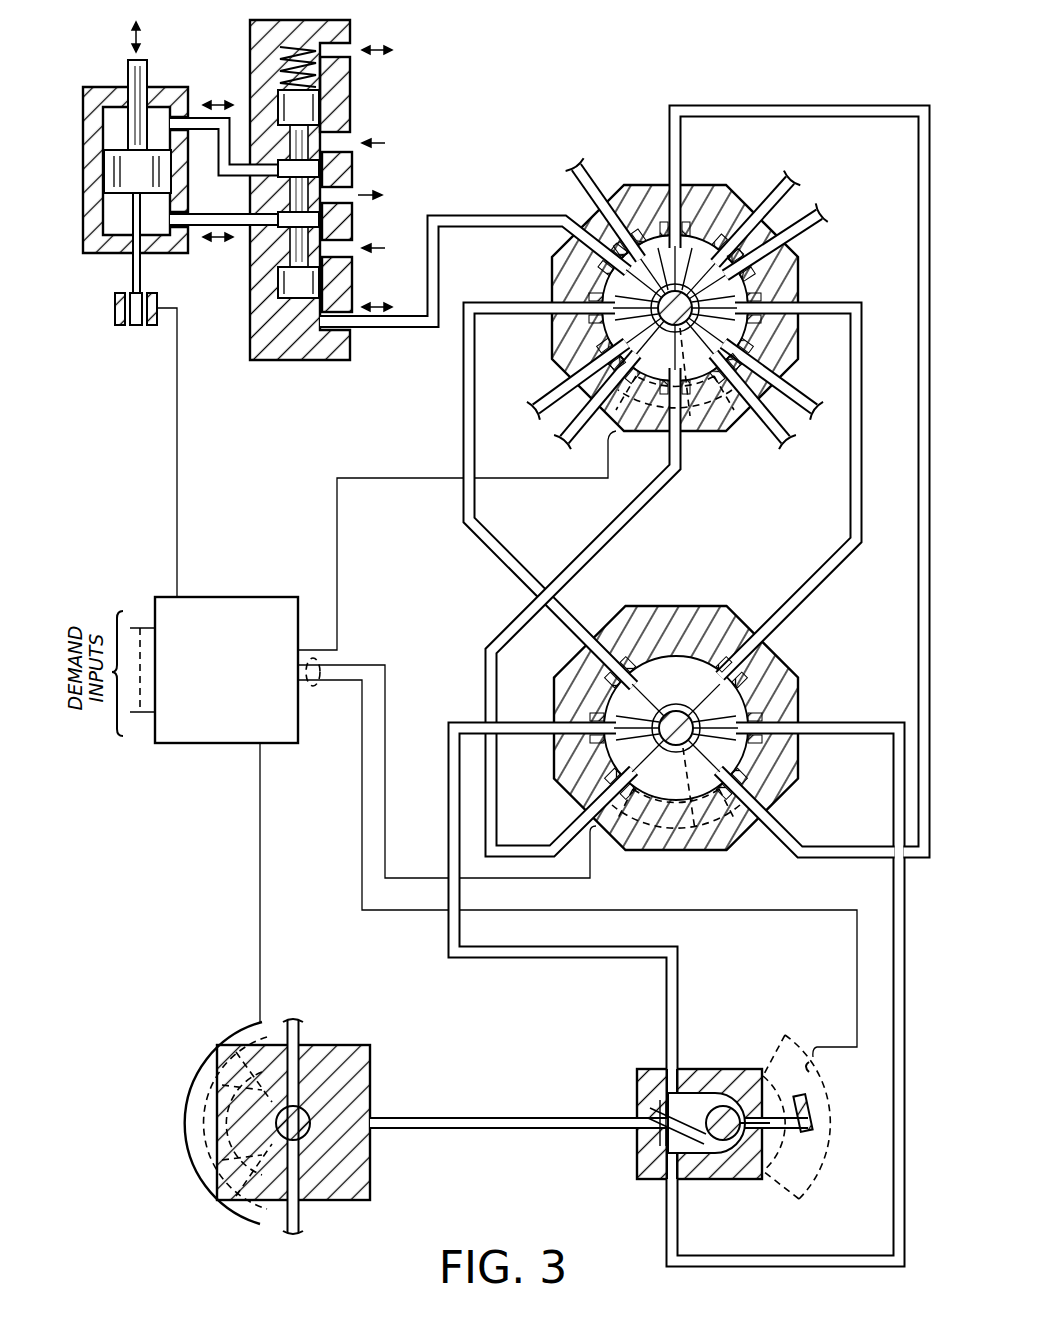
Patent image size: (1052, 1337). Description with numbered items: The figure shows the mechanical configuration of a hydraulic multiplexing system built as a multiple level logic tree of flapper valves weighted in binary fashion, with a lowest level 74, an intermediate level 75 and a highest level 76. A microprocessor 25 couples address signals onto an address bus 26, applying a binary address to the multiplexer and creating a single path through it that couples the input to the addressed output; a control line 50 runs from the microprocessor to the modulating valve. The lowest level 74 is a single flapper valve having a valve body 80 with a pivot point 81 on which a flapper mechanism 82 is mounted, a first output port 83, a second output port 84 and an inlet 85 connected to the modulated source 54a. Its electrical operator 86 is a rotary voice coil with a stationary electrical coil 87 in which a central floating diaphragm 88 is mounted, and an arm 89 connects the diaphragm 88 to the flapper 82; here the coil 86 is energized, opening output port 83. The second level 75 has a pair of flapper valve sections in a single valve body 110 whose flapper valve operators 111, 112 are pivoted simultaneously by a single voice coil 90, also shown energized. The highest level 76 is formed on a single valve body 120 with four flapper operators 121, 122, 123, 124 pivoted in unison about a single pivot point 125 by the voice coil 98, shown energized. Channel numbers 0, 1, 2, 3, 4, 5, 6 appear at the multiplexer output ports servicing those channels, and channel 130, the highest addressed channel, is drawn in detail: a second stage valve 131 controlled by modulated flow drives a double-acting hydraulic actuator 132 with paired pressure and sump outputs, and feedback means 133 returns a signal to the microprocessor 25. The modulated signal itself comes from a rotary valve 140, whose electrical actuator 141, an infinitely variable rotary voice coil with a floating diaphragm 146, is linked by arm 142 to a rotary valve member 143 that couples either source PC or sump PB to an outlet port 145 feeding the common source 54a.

The channel 130 is at (295, 199).
The second stage valve 131 is at (420, 58).
The hydraulic actuator 132 is at (170, 88).
The feedback means 133 is at (121, 336).
The microprocessor 25 is at (254, 596).
The address bus 26 is at (332, 669).
The control line 50 is at (262, 854).
The highest level 76 is at (711, 288).
The valve body 120 is at (800, 274).
The flapper operator 121 is at (640, 318).
The flapper operator 122 is at (688, 402).
The flapper operator 123 is at (700, 303).
The flapper operator 124 is at (662, 238).
The pivot point 125 is at (655, 304).
The voice coil 98 is at (645, 436).
The channel number 2 is at (609, 225).
The channel number 3 is at (740, 223).
The channel number 0 is at (761, 240).
The channel number 1 is at (754, 372).
The channel number 4 is at (740, 389).
The channel number 5 is at (610, 391).
The channel number 6 is at (592, 375).
The intermediate level 75 is at (698, 702).
The valve body 110 is at (713, 612).
The flapper valve operator 111 is at (612, 730).
The flapper valve operator 112 is at (735, 735).
The voice coil 90 is at (695, 838).
The rotary valve 140 is at (264, 1128).
The electrical actuator 141 is at (215, 1160).
The arm 142 is at (222, 1117).
The floating diaphragm 146 is at (205, 1151).
The rotary valve member 143 is at (299, 1140).
The outlet port 145 is at (380, 1130).
The modulated source 54a is at (549, 1117).
The lowest level 74 is at (699, 1086).
The valve body 80 is at (724, 1072).
The pivot point 81 is at (725, 1145).
The flapper mechanism 82 is at (691, 1093).
The first output port 83 is at (664, 1093).
The second output port 84 is at (652, 1150).
The inlet 85 is at (634, 1135).
The electrical operator 86 is at (787, 1082).
The stationary electrical coil 87 is at (818, 1172).
The central floating diaphragm 88 is at (818, 1116).
The arm 89 is at (773, 1140).